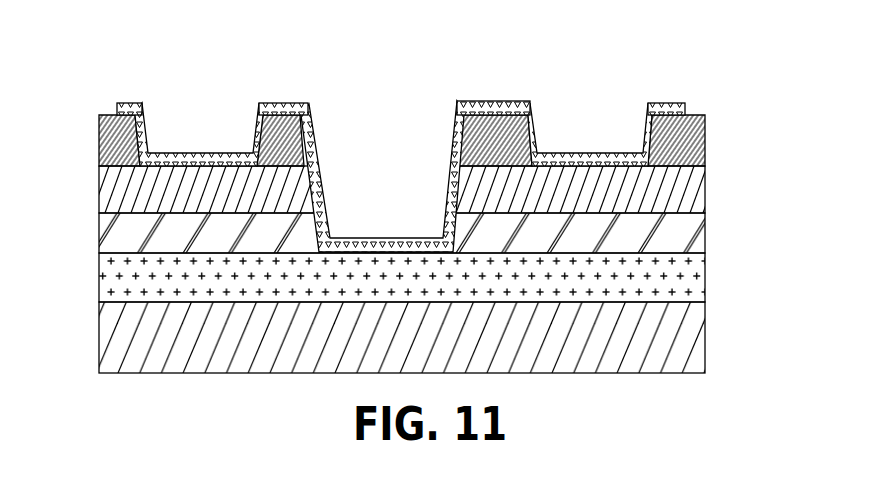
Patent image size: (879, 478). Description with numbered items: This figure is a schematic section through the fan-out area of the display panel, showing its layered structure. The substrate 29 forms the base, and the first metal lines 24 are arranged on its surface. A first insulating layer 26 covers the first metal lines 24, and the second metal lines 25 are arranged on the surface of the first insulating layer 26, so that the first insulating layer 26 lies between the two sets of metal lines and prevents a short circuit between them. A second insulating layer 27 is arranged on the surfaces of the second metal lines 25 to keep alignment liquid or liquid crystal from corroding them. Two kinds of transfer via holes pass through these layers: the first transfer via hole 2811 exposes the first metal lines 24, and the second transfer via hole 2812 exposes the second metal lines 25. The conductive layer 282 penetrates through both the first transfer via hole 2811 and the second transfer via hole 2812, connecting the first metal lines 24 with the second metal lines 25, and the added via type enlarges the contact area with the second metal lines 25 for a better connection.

The second transfer via hole 2812 is at (190, 138).
The first transfer via hole 2811 is at (380, 222).
The conductive layer 282 is at (686, 109).
The second insulating layer 27 is at (663, 140).
The second metal line 25 is at (632, 190).
The first insulating layer 26 is at (632, 236).
The first metal line 24 is at (647, 277).
The substrate 29 is at (630, 340).